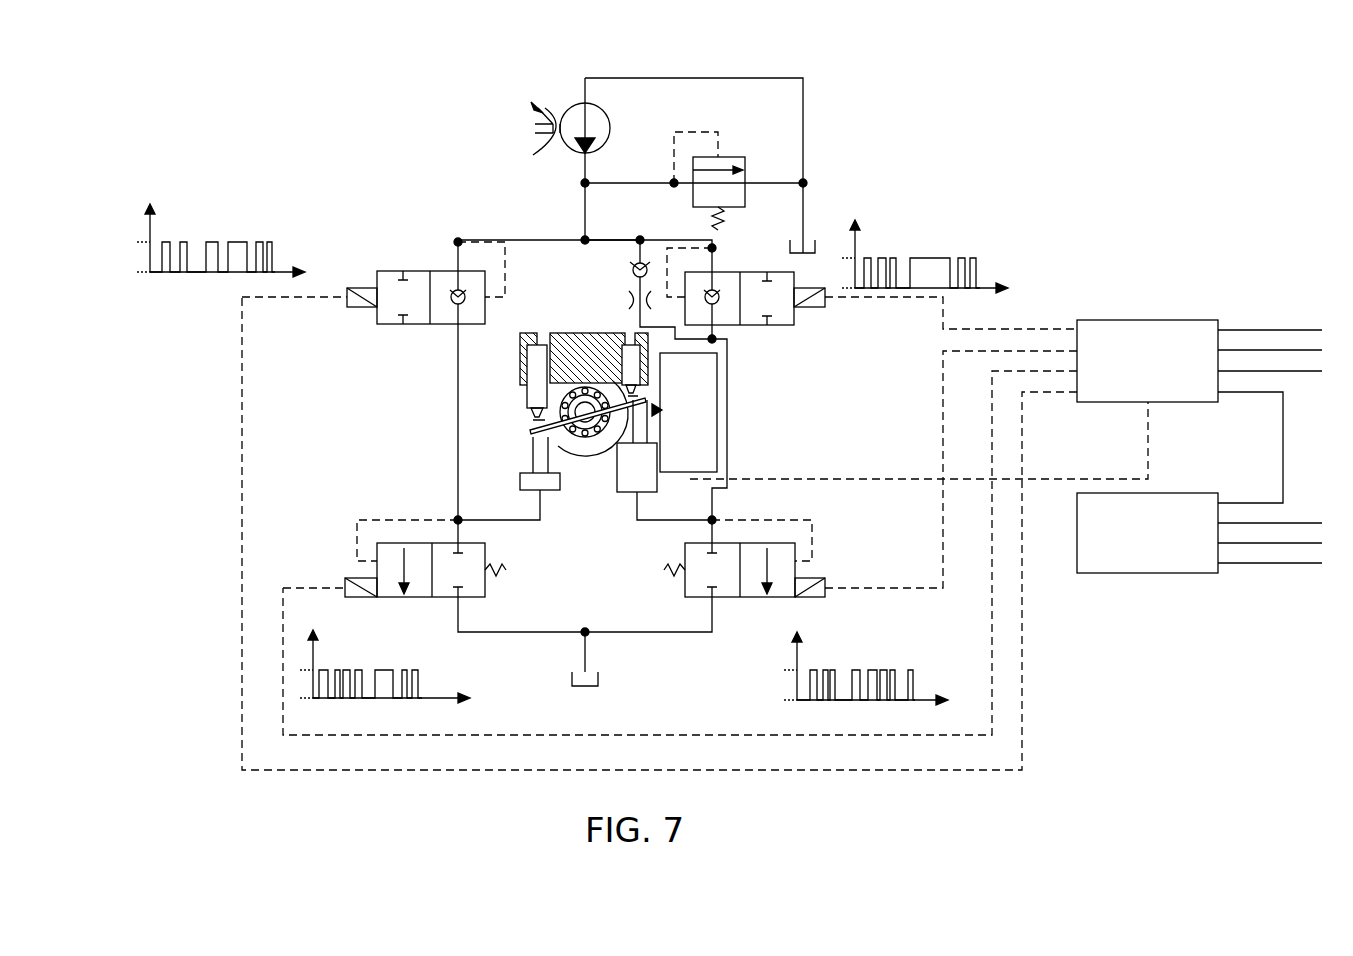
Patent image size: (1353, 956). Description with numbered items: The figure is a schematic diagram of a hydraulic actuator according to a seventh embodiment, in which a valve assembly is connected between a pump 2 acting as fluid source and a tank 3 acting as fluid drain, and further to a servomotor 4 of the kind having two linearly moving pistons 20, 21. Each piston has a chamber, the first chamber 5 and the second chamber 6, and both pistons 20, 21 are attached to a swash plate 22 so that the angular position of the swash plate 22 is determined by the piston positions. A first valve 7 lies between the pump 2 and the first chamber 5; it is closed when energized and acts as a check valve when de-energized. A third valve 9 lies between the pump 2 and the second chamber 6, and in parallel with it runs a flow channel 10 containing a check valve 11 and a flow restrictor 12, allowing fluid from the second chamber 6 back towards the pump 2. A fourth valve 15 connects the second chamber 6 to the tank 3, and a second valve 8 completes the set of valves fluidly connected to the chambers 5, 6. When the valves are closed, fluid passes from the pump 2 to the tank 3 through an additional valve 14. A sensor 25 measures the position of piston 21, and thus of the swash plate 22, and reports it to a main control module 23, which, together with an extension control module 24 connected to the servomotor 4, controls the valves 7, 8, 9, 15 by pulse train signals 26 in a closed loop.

The pump 2 is at (572, 110).
The tank 3 is at (790, 247).
The servomotor 4 is at (580, 450).
The first chamber 5 is at (522, 478).
The second chamber 6 is at (640, 472).
The first valve 7 is at (418, 269).
The second valve 8 is at (376, 572).
The third valve 9 is at (758, 325).
The flow channel 10 is at (638, 262).
The check valve 11 is at (632, 268).
The flow restrictor 12 is at (626, 300).
The additional valve 14 is at (736, 160).
The fourth valve 15 is at (731, 598).
The linearly moving piston 20 is at (532, 442).
The linearly moving piston 21 is at (624, 458).
The swash plate 22 is at (582, 348).
The main control module 23 is at (1122, 320).
The extension control module 24 is at (1130, 575).
The sensor 25 is at (717, 402).
The pulse train signals 26 is at (228, 233).